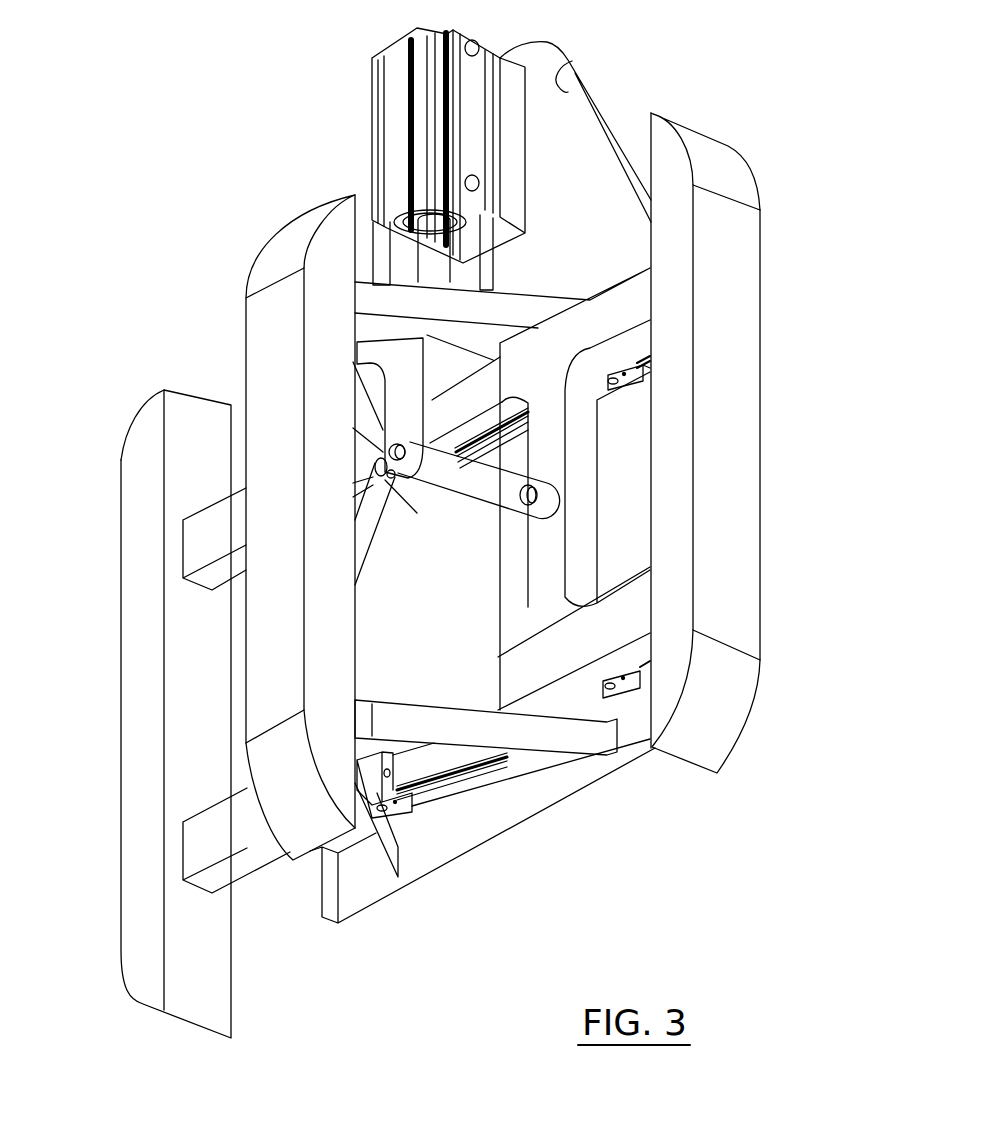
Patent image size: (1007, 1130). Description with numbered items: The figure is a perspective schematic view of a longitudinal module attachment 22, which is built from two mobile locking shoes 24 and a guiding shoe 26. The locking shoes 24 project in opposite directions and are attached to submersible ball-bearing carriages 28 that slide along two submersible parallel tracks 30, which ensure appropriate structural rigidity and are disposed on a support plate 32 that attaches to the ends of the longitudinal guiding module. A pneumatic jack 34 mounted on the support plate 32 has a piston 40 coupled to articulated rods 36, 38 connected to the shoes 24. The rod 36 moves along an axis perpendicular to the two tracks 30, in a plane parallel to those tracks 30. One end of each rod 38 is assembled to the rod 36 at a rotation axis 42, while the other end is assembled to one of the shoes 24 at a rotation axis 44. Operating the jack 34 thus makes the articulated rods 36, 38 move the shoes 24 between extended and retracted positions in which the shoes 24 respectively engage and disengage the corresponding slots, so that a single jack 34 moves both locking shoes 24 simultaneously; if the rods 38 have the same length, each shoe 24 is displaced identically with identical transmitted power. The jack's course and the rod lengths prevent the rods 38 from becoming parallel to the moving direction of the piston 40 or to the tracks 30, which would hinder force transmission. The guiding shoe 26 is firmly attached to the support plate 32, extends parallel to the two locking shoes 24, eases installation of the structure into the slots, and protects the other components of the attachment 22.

The attachment 22 is at (200, 150).
The locking shoes 24 is at (137, 775).
The guiding shoe 26 is at (260, 272).
The ball-bearing carriages 28 is at (627, 387).
The tracks 30 is at (511, 478).
The support plate 32 is at (566, 62).
The pneumatic jack 34 is at (395, 98).
The rod 36 is at (396, 410).
The rods 38 is at (377, 543).
The piston 40 is at (428, 262).
The rotation axis 42 is at (381, 489).
The rotation axis 44 is at (523, 493).